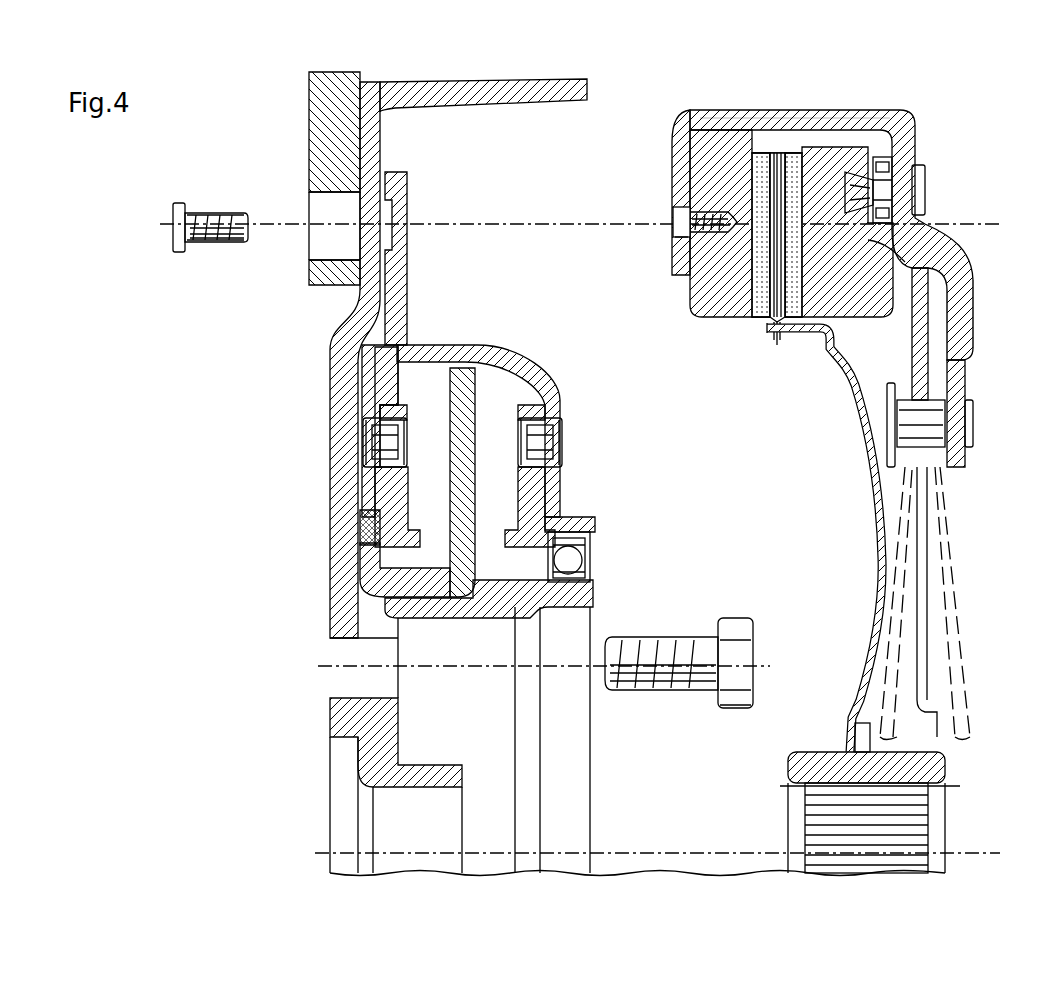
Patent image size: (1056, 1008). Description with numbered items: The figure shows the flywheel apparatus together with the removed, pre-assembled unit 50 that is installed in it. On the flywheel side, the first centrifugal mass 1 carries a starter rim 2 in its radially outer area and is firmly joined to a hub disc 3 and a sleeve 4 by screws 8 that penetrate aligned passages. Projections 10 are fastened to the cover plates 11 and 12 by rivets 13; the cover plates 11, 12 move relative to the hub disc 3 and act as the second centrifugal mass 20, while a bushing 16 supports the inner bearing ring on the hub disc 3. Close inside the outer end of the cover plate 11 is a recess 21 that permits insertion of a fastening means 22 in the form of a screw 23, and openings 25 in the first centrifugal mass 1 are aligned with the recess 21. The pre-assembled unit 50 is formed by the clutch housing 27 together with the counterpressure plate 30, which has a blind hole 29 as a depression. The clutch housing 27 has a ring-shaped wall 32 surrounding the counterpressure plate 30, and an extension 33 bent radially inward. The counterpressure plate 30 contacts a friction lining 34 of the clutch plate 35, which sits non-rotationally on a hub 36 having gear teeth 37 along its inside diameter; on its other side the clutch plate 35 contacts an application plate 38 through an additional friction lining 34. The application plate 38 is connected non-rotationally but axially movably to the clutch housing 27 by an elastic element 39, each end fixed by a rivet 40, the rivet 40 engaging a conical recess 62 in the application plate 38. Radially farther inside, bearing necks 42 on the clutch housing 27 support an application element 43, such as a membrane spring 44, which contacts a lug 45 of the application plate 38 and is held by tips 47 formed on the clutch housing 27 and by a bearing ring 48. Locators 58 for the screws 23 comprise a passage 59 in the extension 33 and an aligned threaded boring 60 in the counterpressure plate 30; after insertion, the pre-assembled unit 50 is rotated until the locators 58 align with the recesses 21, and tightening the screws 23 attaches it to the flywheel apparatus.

The first centrifugal mass 1 is at (330, 560).
The starter rim 2 is at (320, 113).
The hub disc 3 is at (455, 472).
The sleeve 4 is at (445, 620).
The screws 8 is at (641, 692).
The projections 10 is at (400, 497).
The cover plate 11 is at (372, 388).
The cover plate 12 is at (563, 410).
The rivets 13 is at (380, 440).
The bushing 16 is at (490, 600).
The second centrifugal mass 20 is at (372, 357).
The recess 21 is at (408, 228).
The fastening means 22 is at (172, 218).
The screw 23 is at (200, 244).
The openings 25 is at (322, 205).
The clutch housing 27 is at (905, 112).
The blind hole 29 is at (775, 215).
The counterpressure plate 30 is at (724, 320).
The ring-shaped wall 32 is at (815, 125).
The extension 33 is at (682, 145).
The friction lining 34 is at (790, 150).
The clutch plate 35 is at (858, 367).
The hub 36 is at (935, 765).
The gear teeth 37 is at (910, 790).
The application plate 38 is at (928, 316).
The elastic element 39 is at (882, 165).
The rivet 40 is at (920, 190).
The bearing necks 42 is at (970, 448).
The application element 43 is at (928, 556).
The membrane spring 44 is at (920, 517).
The lug 45 is at (962, 272).
The tips 47 is at (937, 396).
The bearing ring 48 is at (915, 406).
The pre-assembled unit 50 is at (860, 108).
The locators 58 is at (664, 208).
The passage 59 is at (686, 224).
The threaded boring 60 is at (690, 250).
The recess 62 is at (906, 232).